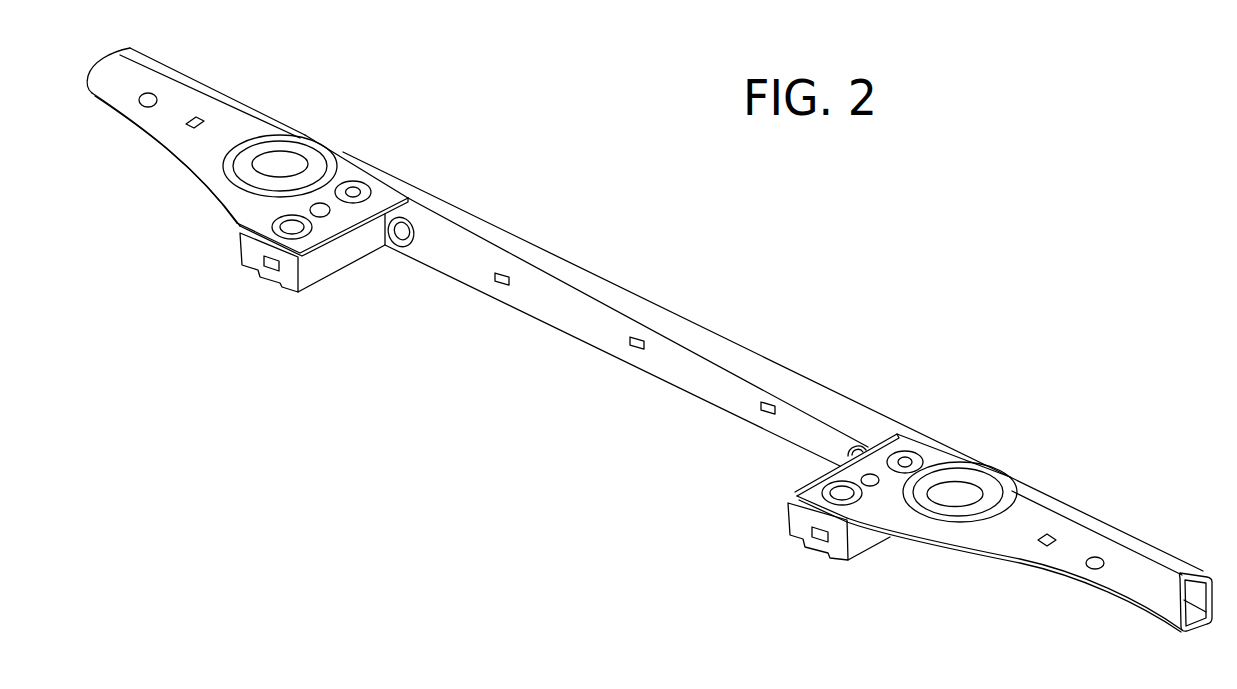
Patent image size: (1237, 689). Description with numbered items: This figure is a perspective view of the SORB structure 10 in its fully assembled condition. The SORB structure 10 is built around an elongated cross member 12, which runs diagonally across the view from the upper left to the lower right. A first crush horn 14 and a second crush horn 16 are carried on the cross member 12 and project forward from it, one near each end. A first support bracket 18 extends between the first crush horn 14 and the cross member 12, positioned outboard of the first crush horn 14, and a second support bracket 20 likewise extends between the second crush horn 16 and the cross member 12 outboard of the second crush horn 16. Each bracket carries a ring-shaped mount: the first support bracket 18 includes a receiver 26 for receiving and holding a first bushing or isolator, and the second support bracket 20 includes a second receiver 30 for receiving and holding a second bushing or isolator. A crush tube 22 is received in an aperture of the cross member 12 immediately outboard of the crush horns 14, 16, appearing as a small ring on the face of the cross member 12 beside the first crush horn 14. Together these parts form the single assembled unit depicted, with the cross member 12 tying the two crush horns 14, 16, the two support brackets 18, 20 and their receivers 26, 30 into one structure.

The SORB structure 10 is at (358, 492).
The cross member 12 is at (657, 320).
The first crush horn 14 is at (333, 256).
The second crush horn 16 is at (863, 538).
The first support bracket 18 is at (210, 150).
The second support bracket 20 is at (1020, 528).
The crush tube 22 is at (408, 250).
The receiver 26 is at (300, 152).
The second receiver 30 is at (968, 486).